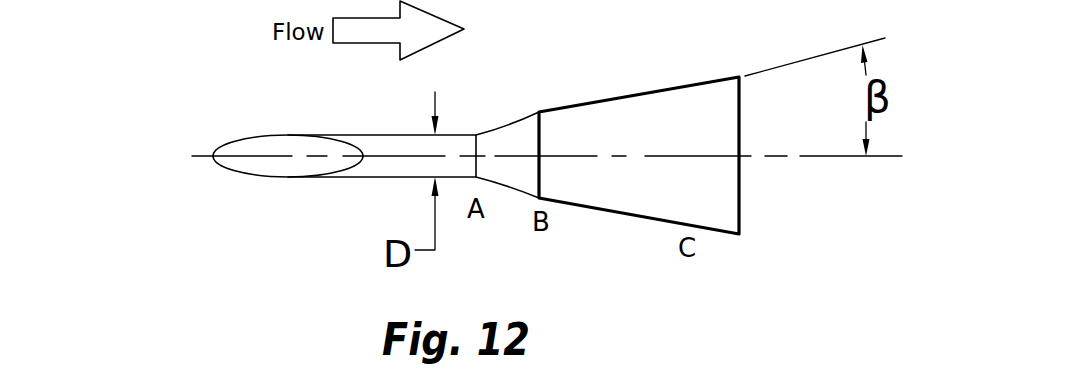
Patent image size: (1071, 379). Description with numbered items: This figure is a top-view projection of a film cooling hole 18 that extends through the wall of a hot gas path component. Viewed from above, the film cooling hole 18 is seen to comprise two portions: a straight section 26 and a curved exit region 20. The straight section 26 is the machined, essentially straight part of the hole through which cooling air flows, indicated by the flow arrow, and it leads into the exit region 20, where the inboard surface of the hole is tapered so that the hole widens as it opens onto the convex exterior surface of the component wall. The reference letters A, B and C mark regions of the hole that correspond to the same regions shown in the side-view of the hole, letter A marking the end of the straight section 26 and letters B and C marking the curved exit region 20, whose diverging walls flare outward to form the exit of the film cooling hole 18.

The film cooling hole 18 is at (187, 157).
The exit region 20 is at (628, 96).
The straight section 26 is at (380, 172).